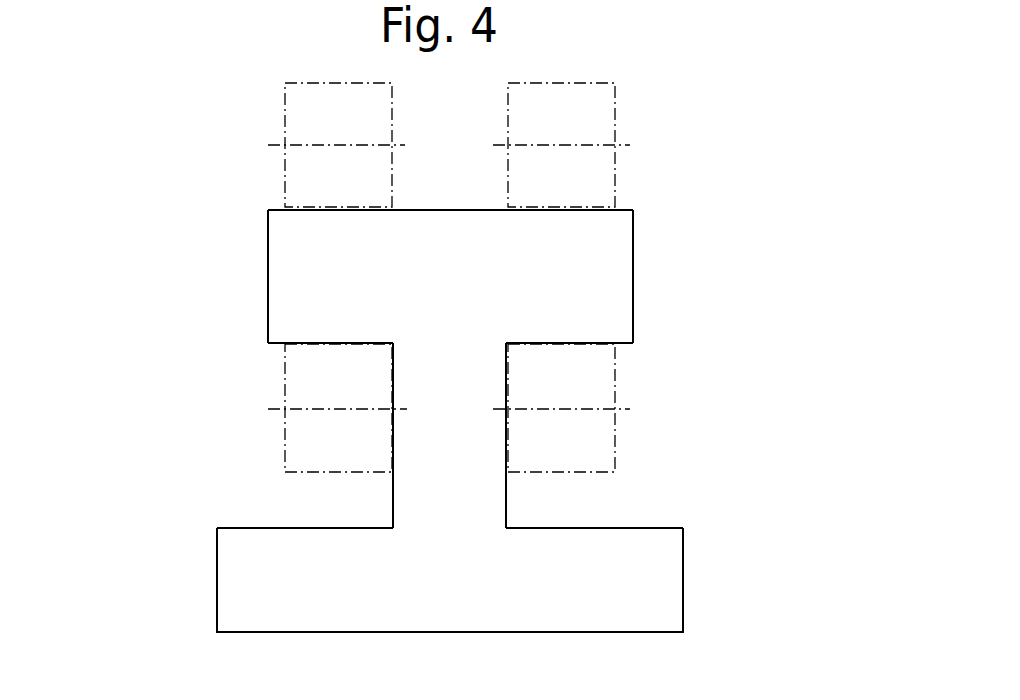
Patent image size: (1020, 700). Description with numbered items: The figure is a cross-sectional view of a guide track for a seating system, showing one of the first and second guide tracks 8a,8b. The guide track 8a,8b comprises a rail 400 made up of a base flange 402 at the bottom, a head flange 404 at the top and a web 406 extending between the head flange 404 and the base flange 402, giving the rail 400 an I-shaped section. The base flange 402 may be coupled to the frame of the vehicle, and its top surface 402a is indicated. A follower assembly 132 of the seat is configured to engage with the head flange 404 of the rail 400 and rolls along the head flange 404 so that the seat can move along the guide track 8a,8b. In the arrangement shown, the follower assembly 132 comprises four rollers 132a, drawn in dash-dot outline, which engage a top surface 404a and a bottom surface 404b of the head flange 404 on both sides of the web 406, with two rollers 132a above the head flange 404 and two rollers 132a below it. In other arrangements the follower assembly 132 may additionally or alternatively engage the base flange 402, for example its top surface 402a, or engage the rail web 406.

The first and second guide tracks 8a,8b is at (213, 203).
The follower assembly 132 is at (737, 125).
The rollers 132a is at (285, 119).
The rail 400 is at (595, 275).
The base flange 402 is at (648, 583).
The top surface of the base flange 402a is at (240, 528).
The head flange 404 is at (298, 293).
The top surface of the head flange 404a is at (623, 210).
The bottom surface of the head flange 404b is at (623, 343).
The web 406 is at (417, 512).